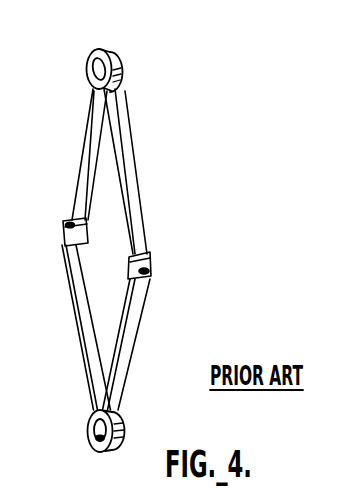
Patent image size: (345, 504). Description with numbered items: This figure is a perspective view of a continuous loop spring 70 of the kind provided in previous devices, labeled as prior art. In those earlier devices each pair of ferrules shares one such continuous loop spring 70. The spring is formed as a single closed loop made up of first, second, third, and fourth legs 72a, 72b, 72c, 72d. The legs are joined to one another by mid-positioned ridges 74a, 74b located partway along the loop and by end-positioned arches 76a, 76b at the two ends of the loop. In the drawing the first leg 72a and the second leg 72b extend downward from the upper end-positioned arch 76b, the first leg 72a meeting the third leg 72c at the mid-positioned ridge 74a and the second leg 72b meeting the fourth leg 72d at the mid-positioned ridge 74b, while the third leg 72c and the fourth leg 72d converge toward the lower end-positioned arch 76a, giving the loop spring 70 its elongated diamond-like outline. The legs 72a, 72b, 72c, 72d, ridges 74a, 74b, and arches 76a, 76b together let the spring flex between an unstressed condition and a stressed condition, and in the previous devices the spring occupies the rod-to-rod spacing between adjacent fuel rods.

The continuous loop spring 70 is at (203, 176).
The first leg 72a is at (128, 138).
The second leg 72b is at (78, 166).
The third leg 72c is at (136, 318).
The fourth leg 72d is at (77, 325).
The mid-positioned ridge 74a is at (152, 258).
The mid-positioned ridge 74b is at (63, 223).
The end-positioned arch 76a is at (127, 420).
The end-positioned arch 76b is at (113, 53).